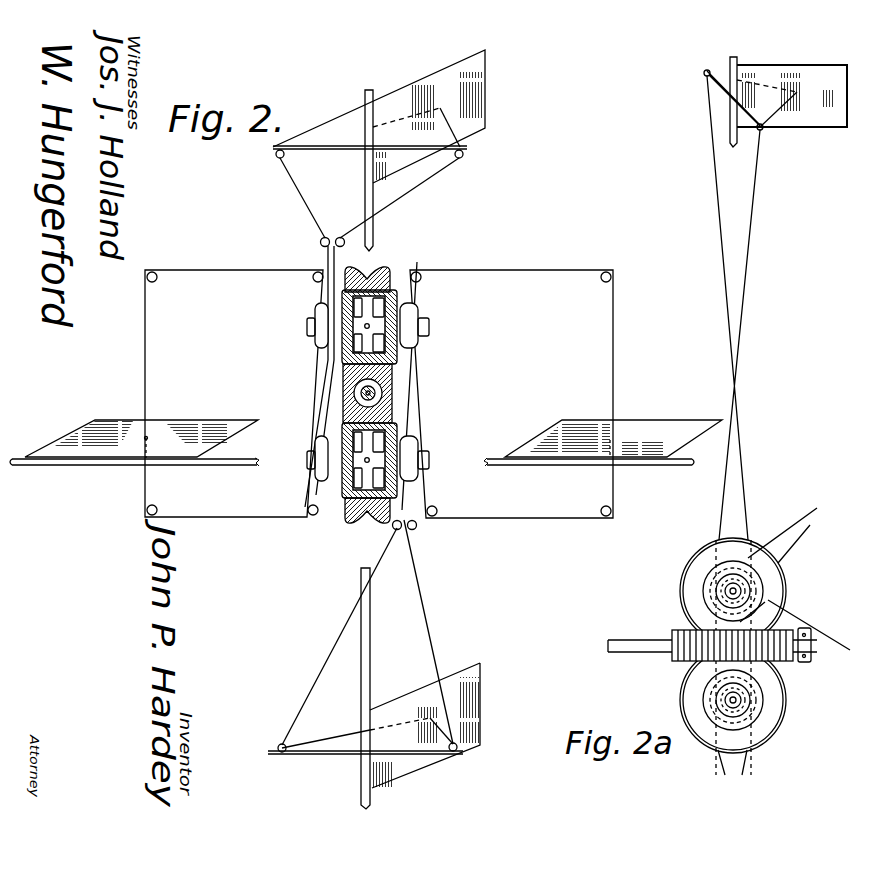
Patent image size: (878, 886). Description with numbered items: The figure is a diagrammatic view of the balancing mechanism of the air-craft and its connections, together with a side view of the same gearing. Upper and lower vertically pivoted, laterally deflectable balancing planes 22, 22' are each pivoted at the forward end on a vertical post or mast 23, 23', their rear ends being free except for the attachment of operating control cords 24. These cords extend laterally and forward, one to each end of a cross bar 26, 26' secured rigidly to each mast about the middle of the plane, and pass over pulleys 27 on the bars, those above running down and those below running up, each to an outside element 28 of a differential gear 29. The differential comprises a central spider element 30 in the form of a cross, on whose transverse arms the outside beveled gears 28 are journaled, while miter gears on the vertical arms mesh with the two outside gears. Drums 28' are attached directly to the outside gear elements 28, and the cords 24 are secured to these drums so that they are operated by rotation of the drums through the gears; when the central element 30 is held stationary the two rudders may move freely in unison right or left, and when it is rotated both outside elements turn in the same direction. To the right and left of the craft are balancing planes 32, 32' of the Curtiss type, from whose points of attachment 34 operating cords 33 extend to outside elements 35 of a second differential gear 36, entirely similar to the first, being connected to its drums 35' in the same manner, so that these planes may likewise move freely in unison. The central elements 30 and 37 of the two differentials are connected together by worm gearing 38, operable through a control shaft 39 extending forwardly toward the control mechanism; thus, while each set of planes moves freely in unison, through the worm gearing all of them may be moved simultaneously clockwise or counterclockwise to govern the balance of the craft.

In FIG. 2, the upper balancing plane 22 is at (392, 116).
In FIG. 2A, the upper balancing plane 22 is at (792, 109).
In FIG. 2, the lower balancing plane 22' is at (401, 725).
In FIG. 2, the vertical post or mast 23 is at (350, 170).
In FIG. 2A, the vertical post or mast 23 is at (712, 98).
In FIG. 2, the vertical post or mast 23' is at (345, 668).
In FIG. 2, the operating control cords 24 is at (414, 190).
In FIG. 2A, the operating control cords 24 is at (712, 768).
In FIG. 2, the cross bar 26 is at (370, 161).
In FIG. 2A, the cross bar 26 is at (715, 100).
In FIG. 2, the cross bar 26' is at (365, 764).
In FIG. 2, the pulleys 27 is at (279, 157).
In FIG. 2, the outside beveled gear 28 is at (358, 498).
In FIG. 2A, the outside beveled gear 28 is at (747, 700).
In FIG. 2, the drum 28' is at (377, 465).
In FIG. 2A, the drum 28' is at (768, 708).
In FIG. 2, the differential gear 29 is at (394, 457).
In FIG. 2, the central spider element 30 is at (398, 452).
In FIG. 2, the balancing plane 32 is at (134, 431).
In FIG. 2, the balancing plane 32' is at (603, 431).
In FIG. 2, the operating cords 33 is at (146, 332).
In FIG. 2A, the operating cords 33 is at (795, 579).
In FIG. 2, the points of attachment 34 is at (148, 436).
In FIG. 2, the outside elements 35 is at (367, 365).
In FIG. 2A, the outside elements 35 is at (711, 591).
In FIG. 2, the drums 35' is at (363, 329).
In FIG. 2A, the drums 35' is at (696, 577).
In FIG. 2, the differential gear 36 is at (400, 318).
In FIG. 2, the central element 37 is at (365, 318).
In FIG. 2, the worm gearing 38 is at (382, 390).
In FIG. 2A, the worm gearing 38 is at (682, 656).
In FIG. 2, the control shaft 39 is at (376, 395).
In FIG. 2A, the control shaft 39 is at (712, 636).